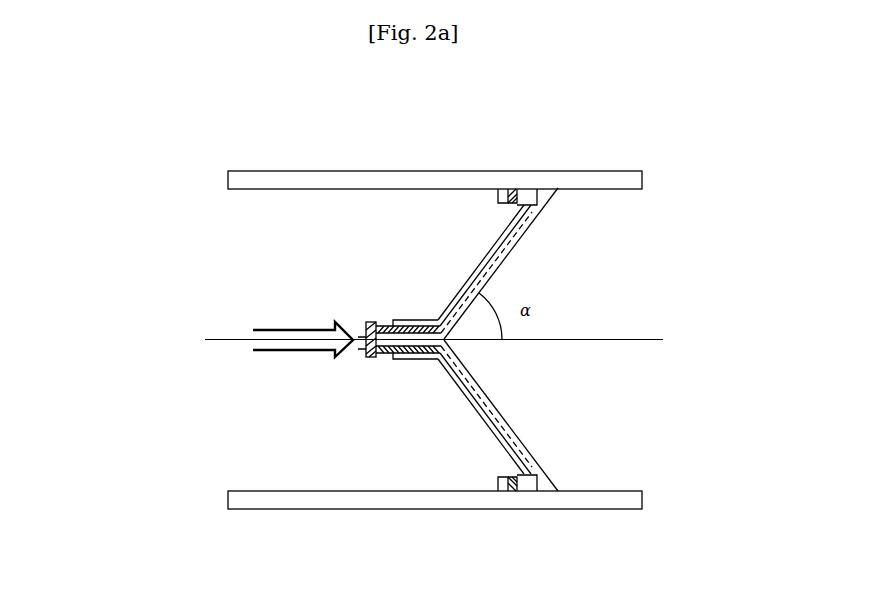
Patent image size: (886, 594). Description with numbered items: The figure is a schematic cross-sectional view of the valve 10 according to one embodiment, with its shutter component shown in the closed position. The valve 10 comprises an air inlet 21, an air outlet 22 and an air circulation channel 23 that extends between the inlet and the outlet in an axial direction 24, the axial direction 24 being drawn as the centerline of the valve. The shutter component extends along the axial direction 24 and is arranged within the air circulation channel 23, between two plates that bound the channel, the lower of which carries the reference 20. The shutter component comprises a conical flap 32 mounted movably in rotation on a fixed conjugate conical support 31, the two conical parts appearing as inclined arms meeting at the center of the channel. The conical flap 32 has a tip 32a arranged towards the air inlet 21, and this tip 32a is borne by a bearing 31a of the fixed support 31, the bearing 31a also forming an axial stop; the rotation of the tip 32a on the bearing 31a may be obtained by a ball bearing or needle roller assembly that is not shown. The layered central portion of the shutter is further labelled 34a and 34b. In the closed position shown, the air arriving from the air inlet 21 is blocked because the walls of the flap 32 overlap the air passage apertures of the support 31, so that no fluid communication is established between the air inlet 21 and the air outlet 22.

The valve 10 is at (128, 120).
The lower plate 20 is at (600, 500).
The air inlet 21 is at (192, 409).
The air outlet 22 is at (683, 427).
The air circulation channel 23 is at (295, 437).
The axial direction 24 is at (635, 340).
The fixed conjugate conical support 31 is at (537, 230).
The bearing 31a is at (373, 323).
The conical flap 32 is at (492, 248).
The tip 32a is at (417, 322).
The lower layer 34a is at (393, 360).
The upper layer 34b is at (368, 330).